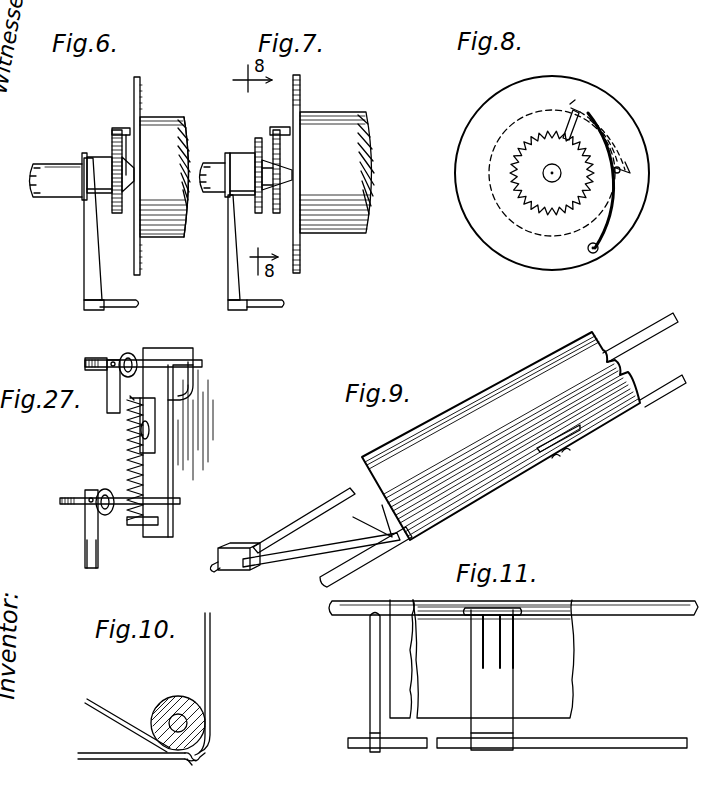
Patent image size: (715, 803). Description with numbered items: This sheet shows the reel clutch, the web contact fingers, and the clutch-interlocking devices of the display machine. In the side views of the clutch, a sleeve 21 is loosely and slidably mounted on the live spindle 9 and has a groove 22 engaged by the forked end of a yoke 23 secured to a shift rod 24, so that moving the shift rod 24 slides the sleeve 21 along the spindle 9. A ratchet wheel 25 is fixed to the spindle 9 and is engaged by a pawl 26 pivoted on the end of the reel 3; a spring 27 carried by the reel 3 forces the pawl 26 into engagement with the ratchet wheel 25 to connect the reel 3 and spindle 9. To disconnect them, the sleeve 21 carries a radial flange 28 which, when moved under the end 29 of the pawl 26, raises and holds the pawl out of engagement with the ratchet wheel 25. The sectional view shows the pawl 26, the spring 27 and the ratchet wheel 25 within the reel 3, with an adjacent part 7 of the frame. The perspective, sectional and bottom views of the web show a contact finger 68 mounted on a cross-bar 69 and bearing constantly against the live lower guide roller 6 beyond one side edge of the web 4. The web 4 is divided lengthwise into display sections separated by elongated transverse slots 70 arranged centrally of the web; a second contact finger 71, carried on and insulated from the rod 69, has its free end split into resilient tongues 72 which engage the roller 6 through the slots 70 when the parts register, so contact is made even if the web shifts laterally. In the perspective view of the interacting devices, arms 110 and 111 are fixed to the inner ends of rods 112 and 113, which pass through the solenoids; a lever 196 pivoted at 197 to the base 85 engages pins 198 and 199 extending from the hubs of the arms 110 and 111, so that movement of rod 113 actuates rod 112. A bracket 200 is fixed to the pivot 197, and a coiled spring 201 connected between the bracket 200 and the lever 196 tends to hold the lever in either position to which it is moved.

In FIG. 6, the reel 3 is at (166, 214).
In FIG. 7, the reel 3 is at (332, 226).
In FIG. 8, the reel 3 is at (507, 232).
In FIG. 9, the web 4 is at (396, 440).
In FIG. 10, the web 4 is at (212, 636).
In FIG. 11, the web 4 is at (560, 689).
In FIG. 9, the lower guide roller 6 is at (350, 572).
In FIG. 10, the lower guide roller 6 is at (170, 696).
In FIG. 11, the lower guide roller 6 is at (635, 600).
In FIG. 8, the frame member 7 is at (714, 270).
In FIG. 6, the live spindle 9 is at (57, 163).
In FIG. 7, the live spindle 9 is at (219, 193).
In FIG. 6, the sleeve 21 is at (97, 156).
In FIG. 7, the sleeve 21 is at (244, 196).
In FIG. 6, the groove 22 is at (74, 152).
In FIG. 7, the groove 22 is at (228, 152).
In FIG. 6, the yoke 23 is at (86, 250).
In FIG. 7, the yoke 23 is at (229, 277).
In FIG. 6, the shift rod 24 is at (128, 304).
In FIG. 7, the shift rod 24 is at (270, 308).
In FIG. 6, the ratchet wheel 25 is at (118, 200).
In FIG. 7, the ratchet wheel 25 is at (276, 145).
In FIG. 8, the ratchet wheel 25 is at (516, 188).
In FIG. 6, the pawl 26 is at (129, 130).
In FIG. 7, the pawl 26 is at (288, 158).
In FIG. 8, the pawl 26 is at (622, 155).
In FIG. 8, the spring 27 is at (612, 214).
In FIG. 6, the radial flange 28 is at (106, 125).
In FIG. 7, the radial flange 28 is at (255, 138).
In FIG. 6, the end of the pawl 29 is at (118, 112).
In FIG. 7, the end of the pawl 29 is at (281, 126).
In FIG. 8, the end of the pawl 29 is at (565, 125).
In FIG. 9, the contact finger 68 is at (290, 558).
In FIG. 11, the contact finger 68 is at (372, 668).
In FIG. 9, the cross-bar 69 is at (312, 510).
In FIG. 11, the cross-bar 69 is at (441, 750).
In FIG. 9, the apertures or slots 70 is at (553, 440).
In FIG. 10, the apertures or slots 70 is at (200, 753).
In FIG. 11, the apertures or slots 70 is at (470, 618).
In FIG. 10, the contact finger 71 is at (112, 760).
In FIG. 11, the contact finger 71 is at (495, 691).
In FIG. 9, the resilient tongues 72 is at (565, 462).
In FIG. 10, the resilient tongues 72 is at (194, 763).
In FIG. 11, the resilient tongues 72 is at (495, 651).
In FIG. 27, the base 85 is at (198, 420).
In FIG. 27, the arm 110 is at (86, 561).
In FIG. 27, the arm 111 is at (118, 354).
In FIG. 27, the rod 112 is at (62, 503).
In FIG. 27, the rod 113 is at (86, 366).
In FIG. 27, the lever 196 is at (165, 484).
In FIG. 27, the pivot 197 is at (178, 410).
In FIG. 27, the pin 198 is at (144, 510).
In FIG. 27, the pin 199 is at (204, 364).
In FIG. 27, the bracket 200 is at (160, 398).
In FIG. 27, the coiled spring 201 is at (127, 447).